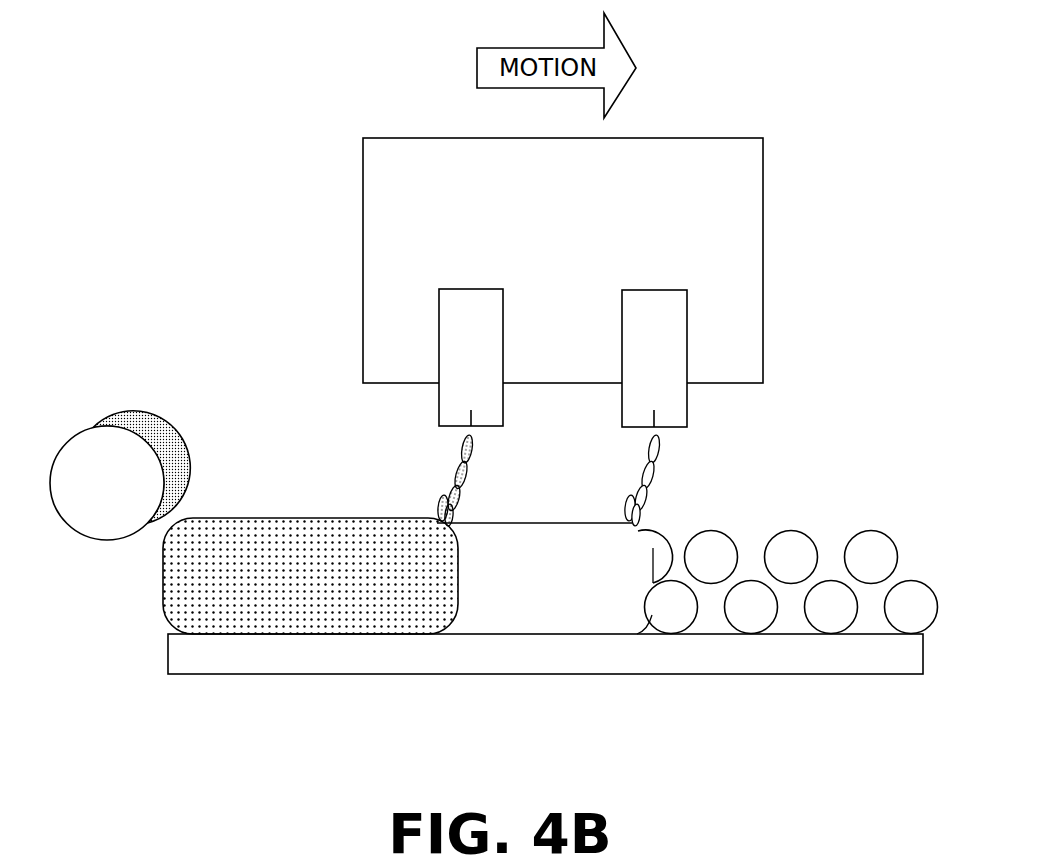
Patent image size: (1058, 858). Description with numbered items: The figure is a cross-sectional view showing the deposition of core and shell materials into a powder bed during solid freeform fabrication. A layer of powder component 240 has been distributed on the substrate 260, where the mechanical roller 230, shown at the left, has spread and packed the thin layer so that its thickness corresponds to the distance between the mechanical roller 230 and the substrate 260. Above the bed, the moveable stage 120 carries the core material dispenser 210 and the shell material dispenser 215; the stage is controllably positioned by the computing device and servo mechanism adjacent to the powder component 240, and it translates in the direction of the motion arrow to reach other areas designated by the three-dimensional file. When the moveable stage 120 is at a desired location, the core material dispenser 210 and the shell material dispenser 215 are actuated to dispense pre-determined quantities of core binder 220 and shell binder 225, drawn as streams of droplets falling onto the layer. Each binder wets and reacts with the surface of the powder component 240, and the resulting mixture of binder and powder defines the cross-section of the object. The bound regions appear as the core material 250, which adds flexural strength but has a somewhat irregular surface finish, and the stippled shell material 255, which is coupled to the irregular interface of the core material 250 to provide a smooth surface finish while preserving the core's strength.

The moveable stage 120 is at (541, 192).
The core material dispenser 210 is at (654, 358).
The shell material dispenser 215 is at (470, 348).
The core binder 220 is at (637, 487).
The shell binder 225 is at (452, 487).
The mechanical roller 230 is at (107, 487).
The powder component 240 is at (870, 555).
The core material 250 is at (548, 610).
The shell material 255 is at (278, 506).
The substrate 260 is at (758, 675).